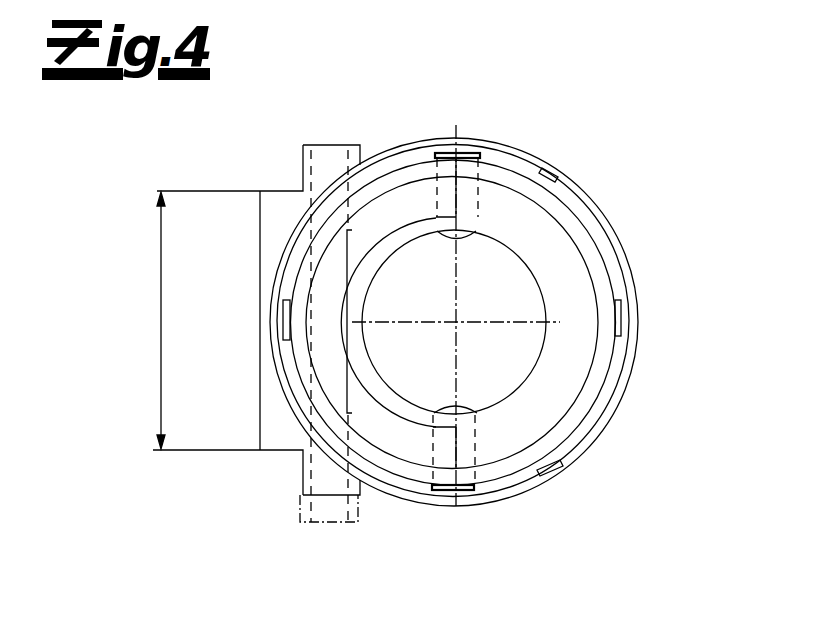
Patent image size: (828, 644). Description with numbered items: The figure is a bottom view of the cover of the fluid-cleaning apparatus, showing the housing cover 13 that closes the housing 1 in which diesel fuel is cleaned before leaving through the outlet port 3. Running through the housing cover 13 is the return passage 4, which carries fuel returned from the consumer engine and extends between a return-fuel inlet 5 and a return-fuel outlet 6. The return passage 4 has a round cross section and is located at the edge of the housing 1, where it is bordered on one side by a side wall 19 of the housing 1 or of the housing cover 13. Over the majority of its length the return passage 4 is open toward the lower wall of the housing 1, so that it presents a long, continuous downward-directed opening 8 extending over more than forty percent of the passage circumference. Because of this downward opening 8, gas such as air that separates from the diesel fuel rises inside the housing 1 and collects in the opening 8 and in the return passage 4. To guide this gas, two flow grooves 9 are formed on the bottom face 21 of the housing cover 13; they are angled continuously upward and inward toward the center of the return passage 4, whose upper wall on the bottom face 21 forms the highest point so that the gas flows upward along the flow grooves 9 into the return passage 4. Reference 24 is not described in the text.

The housing 1 is at (160, 340).
The outlet port 3 is at (465, 495).
The return passage 4 is at (310, 218).
The return-fuel inlet 5 is at (325, 502).
The return-fuel outlet 6 is at (337, 140).
The opening 8 is at (323, 363).
The flow grooves 9 is at (417, 427).
The housing cover 13 is at (620, 150).
The side wall 19 is at (300, 348).
The bottom face of the cover 21 is at (557, 247).
The bore 24 is at (513, 378).